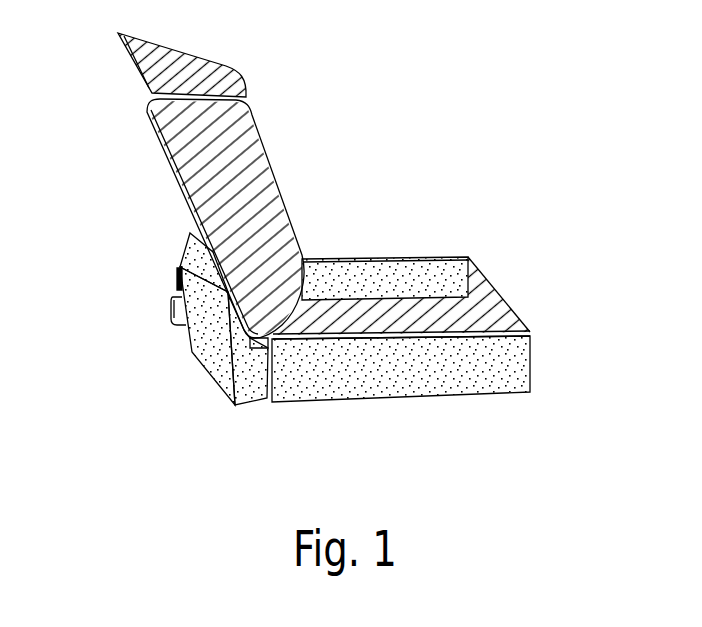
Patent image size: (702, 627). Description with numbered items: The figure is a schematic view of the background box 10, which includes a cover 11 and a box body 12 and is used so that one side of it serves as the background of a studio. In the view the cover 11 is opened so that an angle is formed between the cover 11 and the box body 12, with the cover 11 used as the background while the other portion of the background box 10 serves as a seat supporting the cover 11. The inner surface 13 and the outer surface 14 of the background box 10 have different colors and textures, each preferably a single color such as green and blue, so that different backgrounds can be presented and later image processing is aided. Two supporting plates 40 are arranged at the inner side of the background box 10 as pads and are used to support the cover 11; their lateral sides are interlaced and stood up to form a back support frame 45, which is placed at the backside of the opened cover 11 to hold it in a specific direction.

The background box 10 is at (138, 134).
The cover 11 is at (180, 188).
The box body 12 is at (430, 258).
The inner surface 13 is at (244, 183).
The outer surface 14 is at (443, 373).
The supporting plates 40 is at (205, 362).
The back support frame 45 is at (156, 304).